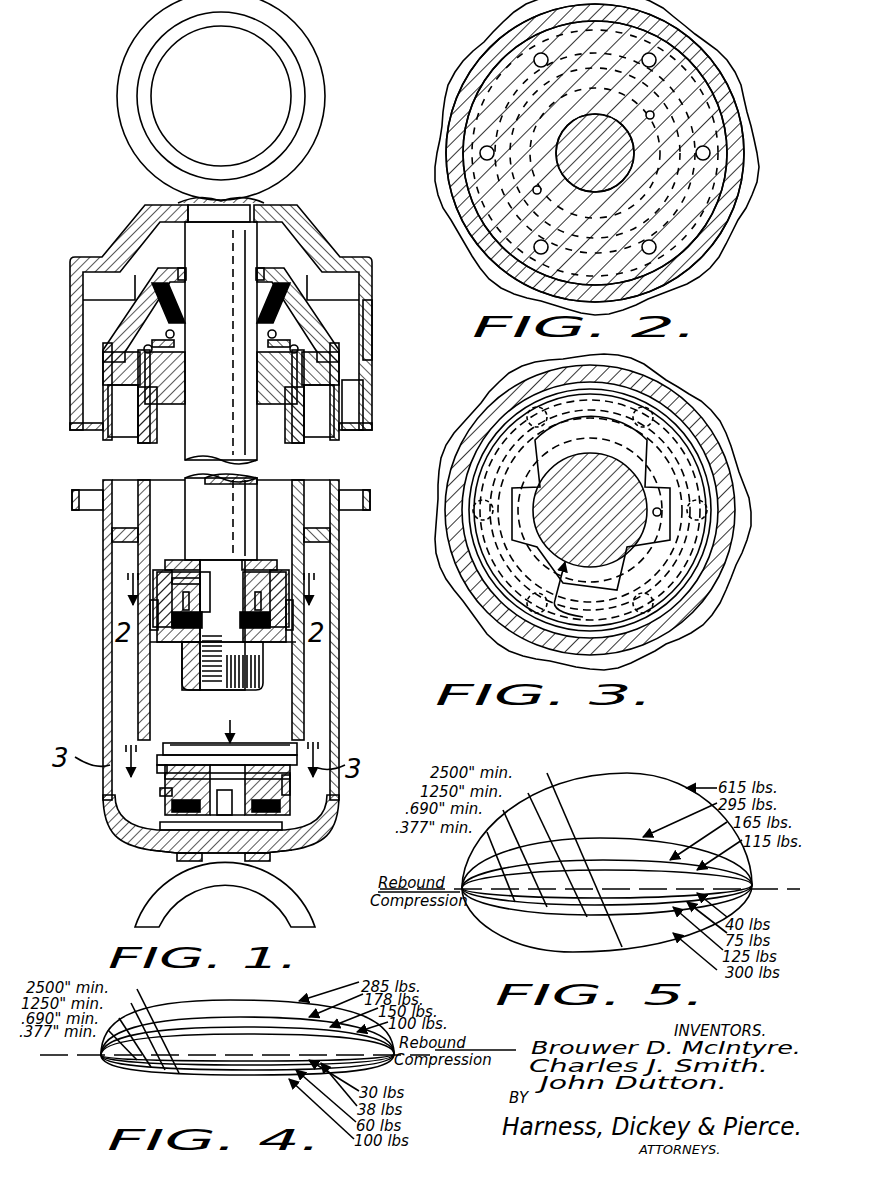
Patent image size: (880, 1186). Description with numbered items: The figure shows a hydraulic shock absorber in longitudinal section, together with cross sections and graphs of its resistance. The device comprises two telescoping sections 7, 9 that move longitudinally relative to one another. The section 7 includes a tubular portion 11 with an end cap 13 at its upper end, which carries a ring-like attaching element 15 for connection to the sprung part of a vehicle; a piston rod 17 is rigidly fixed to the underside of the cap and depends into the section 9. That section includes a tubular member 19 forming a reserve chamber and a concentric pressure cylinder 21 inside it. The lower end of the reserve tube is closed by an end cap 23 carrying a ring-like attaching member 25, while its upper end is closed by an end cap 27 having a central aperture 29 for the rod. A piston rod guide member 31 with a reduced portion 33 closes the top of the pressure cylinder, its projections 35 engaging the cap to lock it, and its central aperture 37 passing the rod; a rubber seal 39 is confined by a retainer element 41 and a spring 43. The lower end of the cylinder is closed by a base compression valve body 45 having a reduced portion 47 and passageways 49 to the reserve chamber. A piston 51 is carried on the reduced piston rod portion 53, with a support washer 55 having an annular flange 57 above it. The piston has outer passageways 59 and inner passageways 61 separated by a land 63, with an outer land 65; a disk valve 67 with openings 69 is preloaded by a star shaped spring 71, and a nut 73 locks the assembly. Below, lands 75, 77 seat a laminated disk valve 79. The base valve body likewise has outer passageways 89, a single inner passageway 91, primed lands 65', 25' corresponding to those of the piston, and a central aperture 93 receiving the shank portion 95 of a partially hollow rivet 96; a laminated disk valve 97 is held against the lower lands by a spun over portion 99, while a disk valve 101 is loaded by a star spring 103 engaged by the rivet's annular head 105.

In FIG. 1, the telescoping section 7 is at (374, 323).
In FIG. 1, the telescoping section 9 is at (348, 383).
In FIG. 1, the tubular portion 11 is at (368, 303).
In FIG. 1, the end cap 13 is at (243, 233).
In FIG. 1, the ring-like attaching element 15 is at (130, 132).
In FIG. 1, the piston rod 17 is at (253, 218).
In FIG. 1, the tubular member (reserve tube) 19 is at (340, 531).
In FIG. 1, the pressure cylinder 21 is at (345, 430).
In FIG. 2, the pressure cylinder 21 is at (703, 252).
In FIG. 3, the pressure cylinder 21 is at (473, 432).
In FIG. 1, the end cap 23 is at (300, 838).
In FIG. 1, the ring-like attaching member 25 is at (247, 893).
In FIG. 1, the cup plate 25' is at (261, 827).
In FIG. 1, the end cap 27 is at (291, 290).
In FIG. 1, the central aperture 29 is at (247, 240).
In FIG. 1, the piston rod guide member 31 is at (140, 367).
In FIG. 1, the reduced portion 33 is at (167, 403).
In FIG. 1, the projections 35 is at (147, 352).
In FIG. 1, the central aperture 37 is at (187, 367).
In FIG. 1, the rubber seal 39 is at (188, 273).
In FIG. 1, the retainer element 41 is at (188, 294).
In FIG. 1, the spring 43 is at (254, 336).
In FIG. 1, the base compression valve body 45 is at (175, 806).
In FIG. 3, the base compression valve body 45 is at (621, 452).
In FIG. 1, the reduced portion 47 is at (160, 757).
In FIG. 1, the passageways 49 is at (168, 812).
In FIG. 1, the piston 51 is at (288, 577).
In FIG. 2, the piston 51 is at (700, 197).
In FIG. 1, the reduced piston rod portion 53 is at (245, 505).
In FIG. 2, the reduced piston rod portion 53 is at (595, 153).
In FIG. 1, the support washer 55 is at (193, 563).
In FIG. 1, the annular flange 57 is at (167, 560).
In FIG. 1, the outer passageways 59 is at (297, 650).
In FIG. 2, the outer passageways 59 is at (650, 55).
In FIG. 1, the inner passageways 61 is at (140, 655).
In FIG. 2, the inner passageways 61 is at (646, 113).
In FIG. 1, the land 63 is at (237, 560).
In FIG. 1, the land 65 is at (132, 586).
In FIG. 1, the land 65' is at (217, 748).
In FIG. 1, the disk valve 67 is at (208, 580).
In FIG. 1, the openings 69 is at (242, 570).
In FIG. 1, the star shaped spring 71 is at (277, 570).
In FIG. 1, the nut 73 is at (180, 673).
In FIG. 1, the land 75 is at (200, 612).
In FIG. 1, the land 77 is at (187, 647).
In FIG. 1, the laminated disk valve 79 is at (267, 647).
In FIG. 1, the outer passageways 89 is at (290, 785).
In FIG. 3, the outer passageways 89 is at (510, 390).
In FIG. 1, the inner passageway 91 is at (290, 757).
In FIG. 3, the inner passageway 91 is at (653, 513).
In FIG. 1, the central aperture 93 is at (162, 792).
In FIG. 1, the shank portion 95 is at (178, 857).
In FIG. 1, the partially hollow rivet 96 is at (230, 721).
In FIG. 3, the partially hollow rivet 96 is at (578, 598).
In FIG. 1, the laminated disk valve 97 is at (270, 858).
In FIG. 1, the spun over portion 99 is at (185, 858).
In FIG. 1, the disk valve 101 is at (195, 755).
In FIG. 3, the disk valve 101 is at (663, 427).
In FIG. 1, the star spring 103 is at (200, 743).
In FIG. 1, the annular flange or head 105 is at (256, 723).